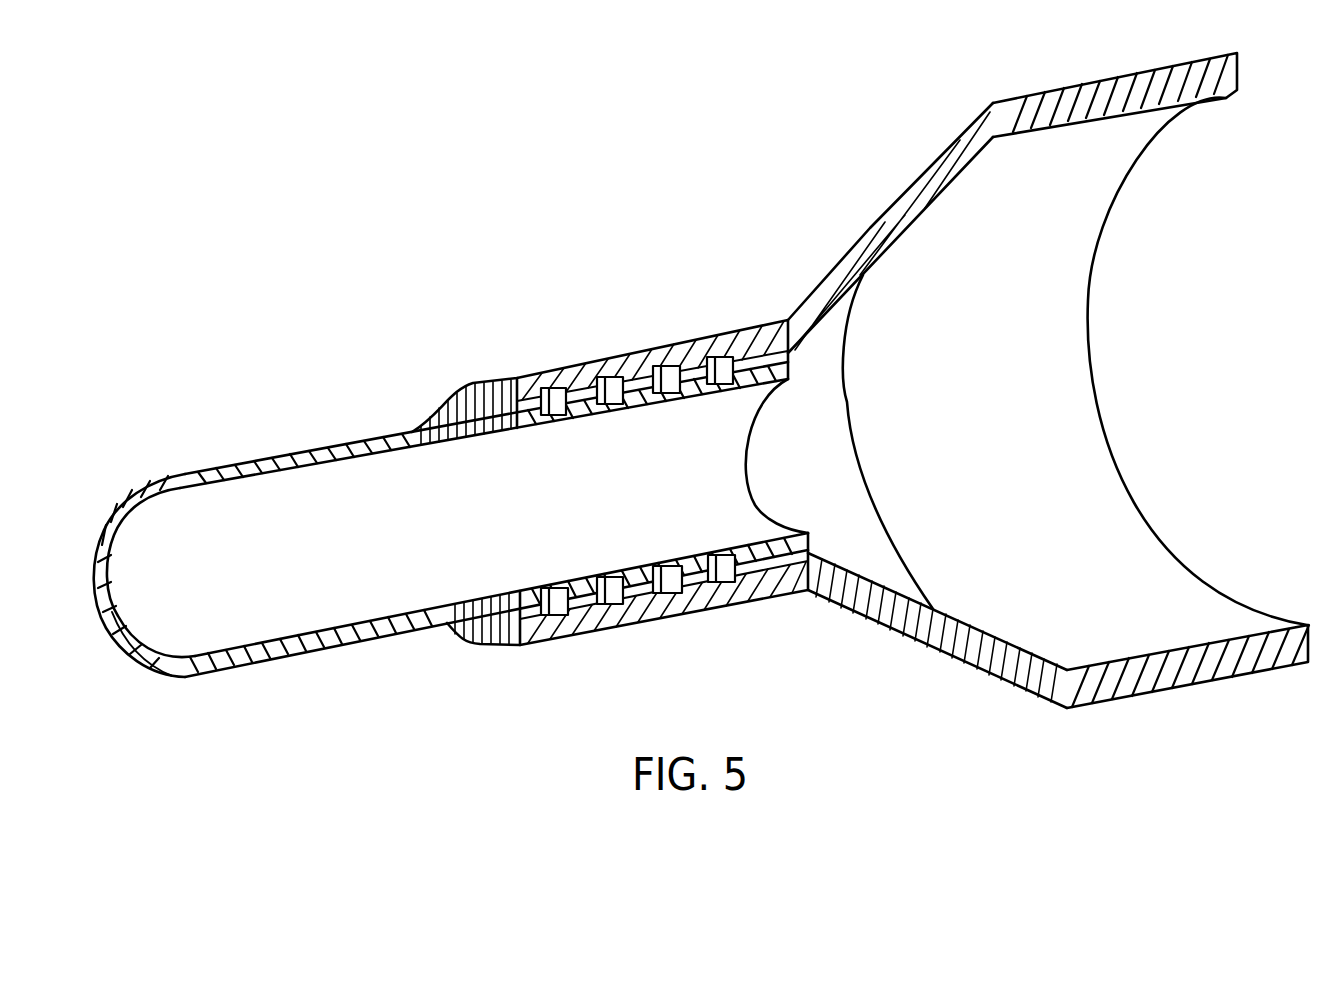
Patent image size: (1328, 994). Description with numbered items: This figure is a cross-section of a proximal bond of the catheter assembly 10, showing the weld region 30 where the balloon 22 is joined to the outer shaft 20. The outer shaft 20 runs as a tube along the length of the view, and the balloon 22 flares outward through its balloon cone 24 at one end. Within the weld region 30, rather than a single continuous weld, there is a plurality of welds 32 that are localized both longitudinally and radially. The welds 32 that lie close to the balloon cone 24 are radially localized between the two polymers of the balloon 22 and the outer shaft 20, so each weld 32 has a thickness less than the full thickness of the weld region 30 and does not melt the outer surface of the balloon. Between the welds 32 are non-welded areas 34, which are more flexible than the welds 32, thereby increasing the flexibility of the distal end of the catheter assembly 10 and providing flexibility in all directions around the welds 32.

The catheter assembly 10 is at (381, 212).
The outer shaft 20 is at (215, 468).
The balloon 22 is at (1090, 85).
The balloon cone 24 is at (892, 213).
The weld region 30 is at (785, 312).
The welds 32 is at (480, 647).
The non-welded areas 34 is at (538, 640).